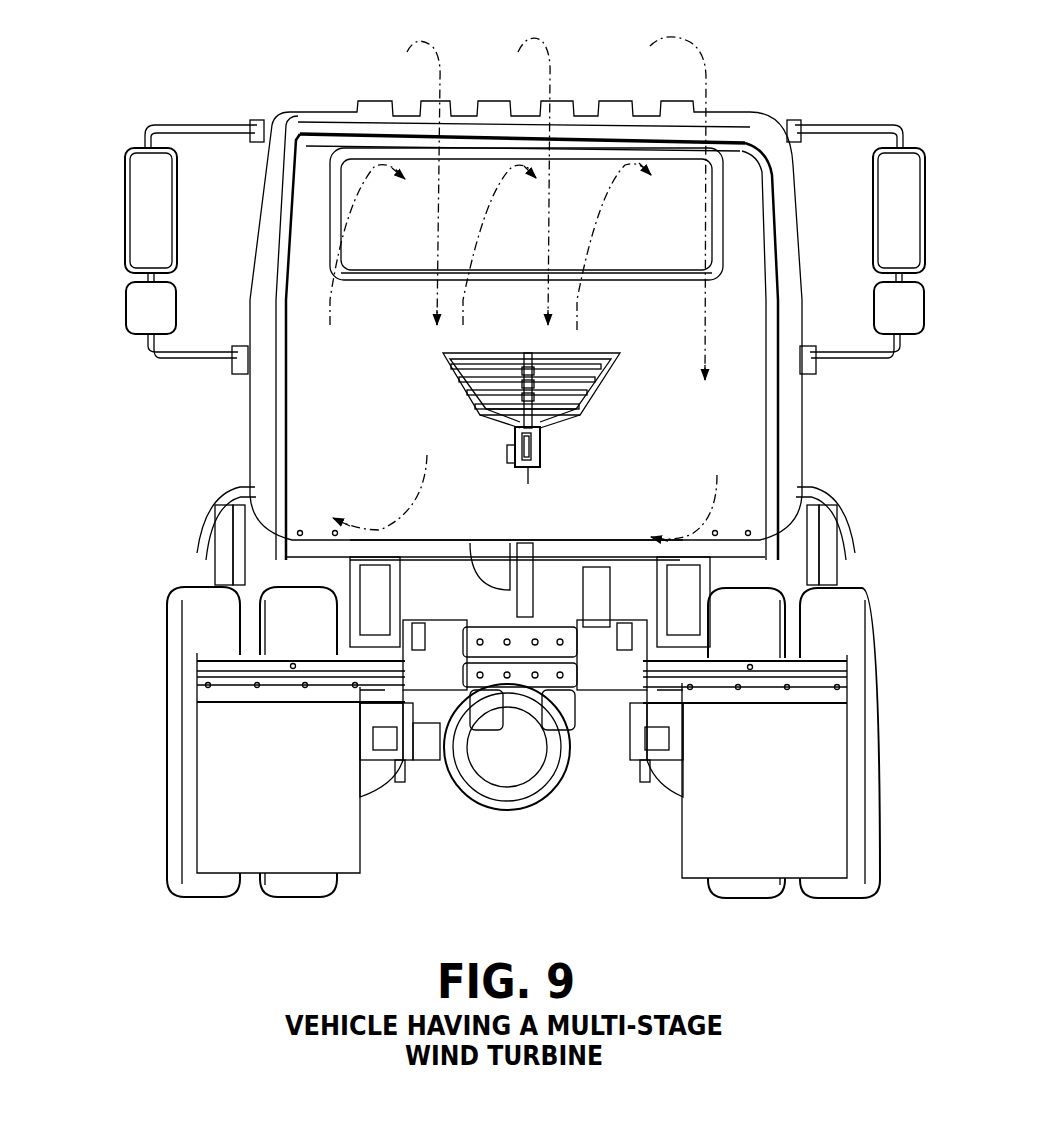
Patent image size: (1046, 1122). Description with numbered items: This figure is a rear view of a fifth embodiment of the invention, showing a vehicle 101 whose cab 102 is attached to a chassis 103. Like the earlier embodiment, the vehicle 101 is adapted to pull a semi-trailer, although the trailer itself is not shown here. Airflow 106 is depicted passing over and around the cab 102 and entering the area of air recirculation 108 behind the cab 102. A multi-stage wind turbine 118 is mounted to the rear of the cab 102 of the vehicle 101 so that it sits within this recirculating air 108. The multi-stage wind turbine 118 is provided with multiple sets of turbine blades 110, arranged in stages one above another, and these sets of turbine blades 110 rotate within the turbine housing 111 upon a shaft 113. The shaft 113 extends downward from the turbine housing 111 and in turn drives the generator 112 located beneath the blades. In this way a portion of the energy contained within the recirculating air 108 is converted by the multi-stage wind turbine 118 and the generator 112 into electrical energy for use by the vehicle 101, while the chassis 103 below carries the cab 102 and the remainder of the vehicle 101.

The vehicle 101 is at (368, 98).
The cab 102 is at (733, 197).
The chassis 103 is at (432, 752).
The airflow 106 is at (553, 66).
The area of air recirculation 108 is at (665, 318).
The turbine blades 110 is at (480, 405).
The turbine housing 111 is at (605, 388).
The generator 112 is at (535, 472).
The shaft 113 is at (520, 418).
The multi-stage wind turbine 118 is at (437, 353).